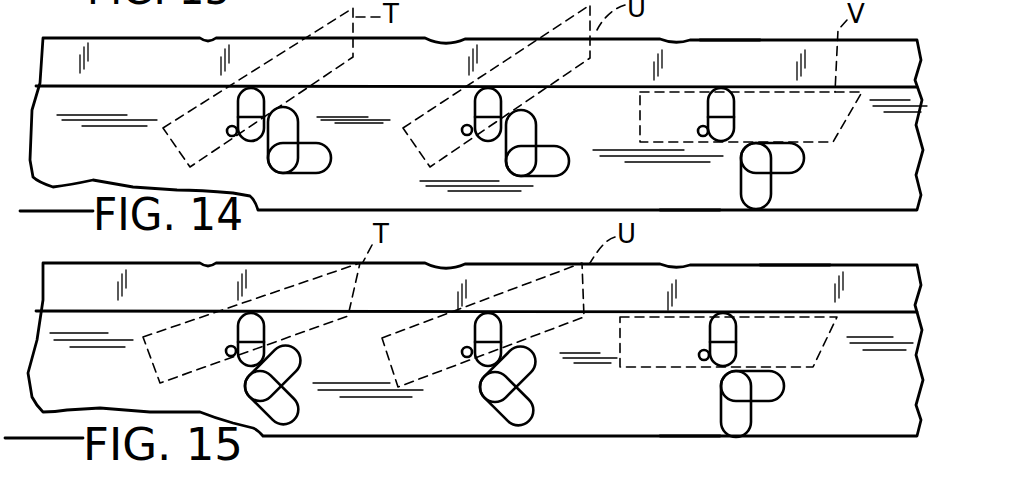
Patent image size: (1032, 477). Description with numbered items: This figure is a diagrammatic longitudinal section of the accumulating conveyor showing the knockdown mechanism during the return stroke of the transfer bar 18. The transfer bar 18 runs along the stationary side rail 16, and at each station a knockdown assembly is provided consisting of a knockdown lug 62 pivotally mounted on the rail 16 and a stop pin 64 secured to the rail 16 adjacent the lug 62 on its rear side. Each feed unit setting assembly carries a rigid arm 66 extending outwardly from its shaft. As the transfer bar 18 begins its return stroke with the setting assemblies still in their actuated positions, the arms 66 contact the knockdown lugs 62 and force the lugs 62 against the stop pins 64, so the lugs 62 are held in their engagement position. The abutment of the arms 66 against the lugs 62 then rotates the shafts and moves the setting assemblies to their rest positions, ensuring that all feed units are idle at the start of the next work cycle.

In FIG. 14, the rail 16 is at (752, 40).
In FIG. 15, the rail 16 is at (818, 264).
In FIG. 14, the transfer bar 18 is at (687, 193).
In FIG. 15, the transfer bar 18 is at (687, 420).
In FIG. 14, the knockdown lug 62 is at (735, 118).
In FIG. 15, the knockdown lug 62 is at (735, 345).
In FIG. 14, the stop pin 64 is at (227, 132).
In FIG. 15, the stop pin 64 is at (225, 350).
In FIG. 14, the rigid arm 66 is at (330, 158).
In FIG. 15, the rigid arm 66 is at (302, 418).